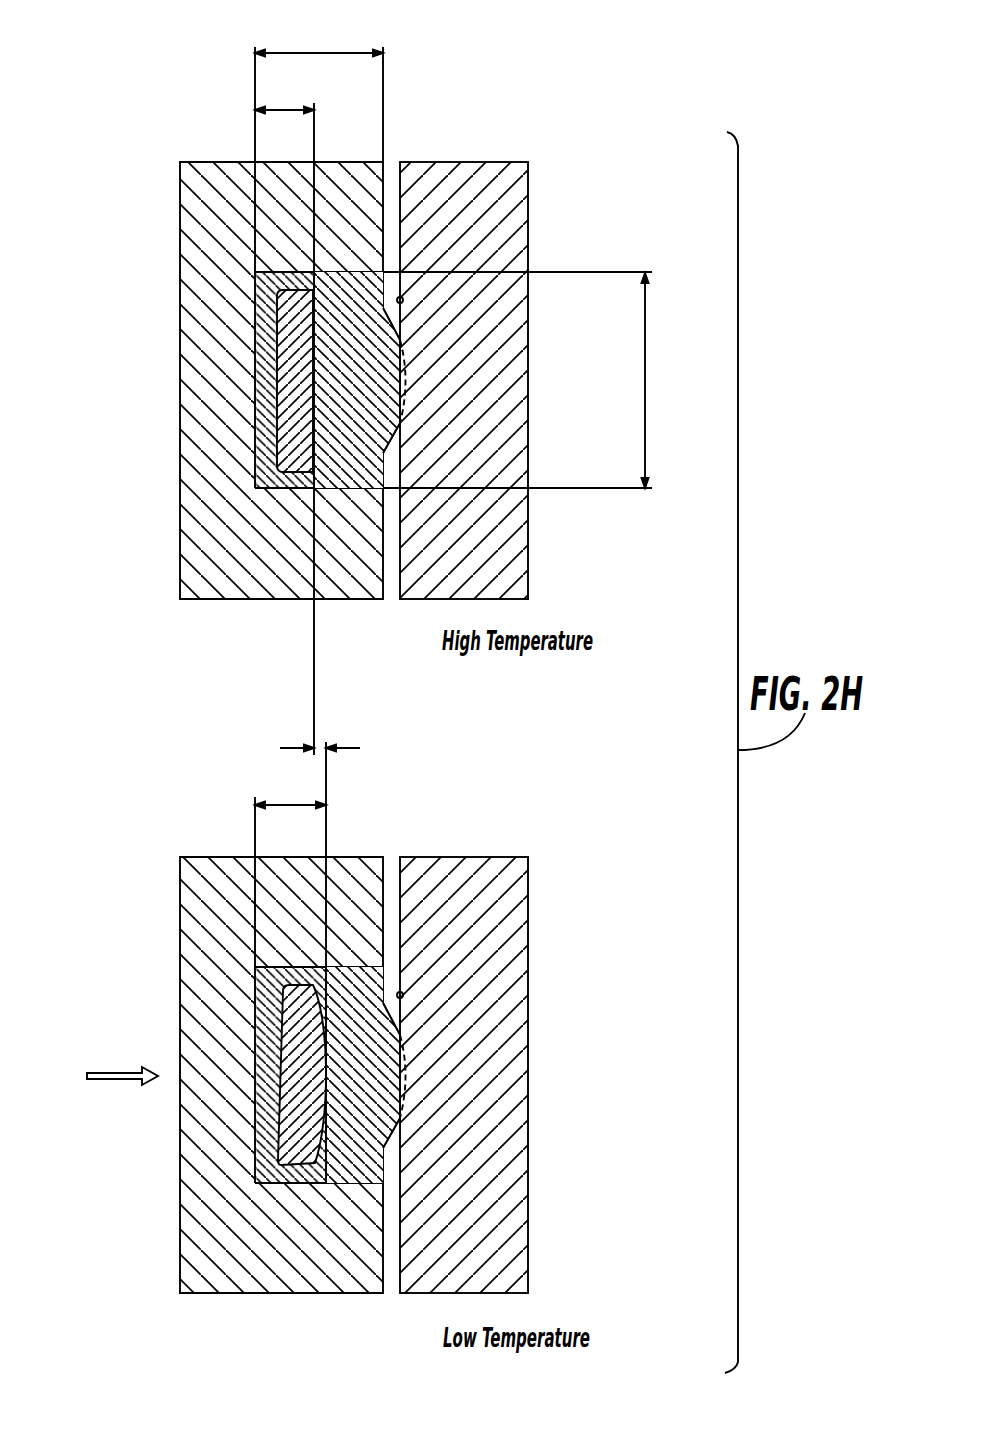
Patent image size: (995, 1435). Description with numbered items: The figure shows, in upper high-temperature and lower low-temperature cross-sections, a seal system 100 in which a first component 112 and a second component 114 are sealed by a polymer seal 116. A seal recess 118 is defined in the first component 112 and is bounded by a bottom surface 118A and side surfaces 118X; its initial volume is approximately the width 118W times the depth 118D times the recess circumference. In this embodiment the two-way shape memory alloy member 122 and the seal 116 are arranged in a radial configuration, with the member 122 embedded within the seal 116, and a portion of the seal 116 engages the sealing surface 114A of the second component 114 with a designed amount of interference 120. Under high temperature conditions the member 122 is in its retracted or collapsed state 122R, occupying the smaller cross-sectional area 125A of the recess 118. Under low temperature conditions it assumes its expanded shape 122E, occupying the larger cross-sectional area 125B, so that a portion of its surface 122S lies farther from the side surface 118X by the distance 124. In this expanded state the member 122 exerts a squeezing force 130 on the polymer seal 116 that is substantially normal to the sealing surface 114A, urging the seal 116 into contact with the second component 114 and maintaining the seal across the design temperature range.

The seal system 100 is at (158, 190).
The first component 112 is at (197, 530).
The second component 114 is at (510, 530).
The sealing surface 114A is at (403, 302).
The polymer seal 116 is at (357, 463).
The seal recess 118 is at (255, 344).
The bottom surface 118A is at (255, 437).
The depth of the seal recess 118D is at (329, 50).
The width of the seal recess 118W is at (647, 403).
The side surface 118X is at (351, 272).
The interference 120 is at (363, 380).
The two-way shape memory alloy member 122 is at (286, 362).
The retracted or collapsed state 122R is at (292, 325).
The expanded shape or size 122E is at (297, 1012).
The surface of the TWSMA member 122S is at (326, 369).
The distance 124 is at (318, 746).
The smaller cross-sectional area 125A is at (284, 108).
The larger cross-sectional area 125B is at (288, 803).
The force 130 is at (102, 1079).